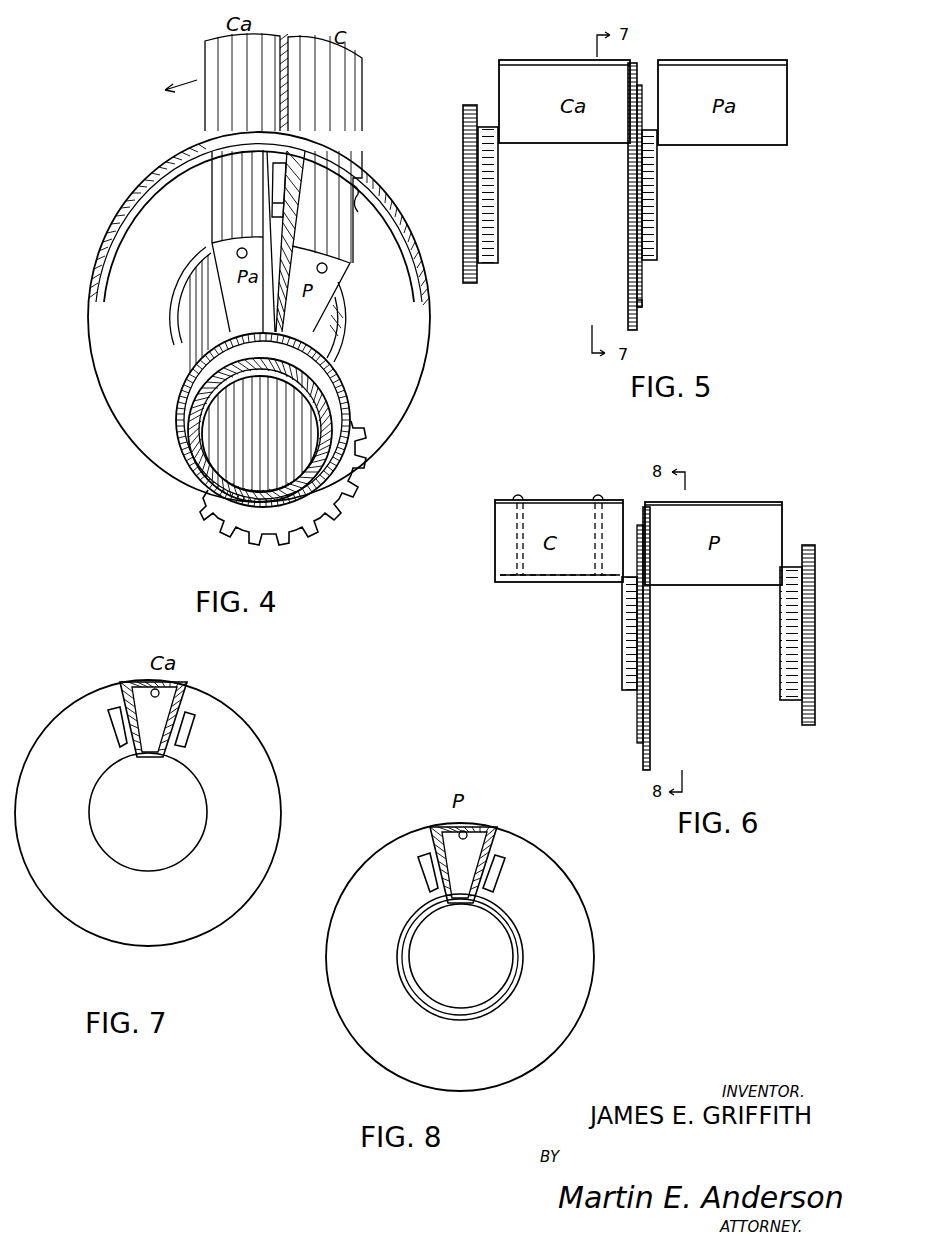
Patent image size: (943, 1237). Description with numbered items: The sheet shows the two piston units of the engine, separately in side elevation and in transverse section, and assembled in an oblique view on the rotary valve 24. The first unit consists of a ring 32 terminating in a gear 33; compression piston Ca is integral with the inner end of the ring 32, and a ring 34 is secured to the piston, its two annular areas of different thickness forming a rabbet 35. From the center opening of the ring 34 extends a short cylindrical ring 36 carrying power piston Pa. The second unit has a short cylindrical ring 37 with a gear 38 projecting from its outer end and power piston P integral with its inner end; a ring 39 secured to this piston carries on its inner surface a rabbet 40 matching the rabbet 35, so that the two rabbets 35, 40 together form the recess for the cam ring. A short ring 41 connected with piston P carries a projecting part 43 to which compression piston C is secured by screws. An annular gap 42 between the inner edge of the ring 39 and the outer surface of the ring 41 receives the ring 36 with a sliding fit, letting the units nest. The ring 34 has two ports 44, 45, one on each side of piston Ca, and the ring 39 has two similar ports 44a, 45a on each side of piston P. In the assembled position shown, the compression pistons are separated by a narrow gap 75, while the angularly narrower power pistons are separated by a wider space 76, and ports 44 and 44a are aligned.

In FIG. 4, the rotary valve 24 is at (202, 333).
In FIG. 5, the ring 32 is at (495, 195).
In FIG. 5, the gear 33 is at (466, 156).
In FIG. 4, the ring 34 is at (160, 155).
In FIG. 5, the ring 34 is at (630, 201).
In FIG. 7, the ring 34 is at (148, 813).
In FIG. 5, the rabbet 35 is at (637, 315).
In FIG. 4, the ring 36 is at (180, 287).
In FIG. 5, the ring 36 is at (656, 203).
In FIG. 4, the cylindrical ring 37 is at (190, 377).
In FIG. 6, the cylindrical ring 37 is at (790, 636).
In FIG. 4, the gear 38 is at (323, 390).
In FIG. 6, the gear 38 is at (815, 555).
In FIG. 4, the ring 39 is at (420, 338).
In FIG. 6, the ring 39 is at (652, 633).
In FIG. 8, the ring 39 is at (460, 957).
In FIG. 6, the rabbet 40 is at (642, 758).
In FIG. 4, the ring 41 is at (187, 302).
In FIG. 6, the ring 41 is at (622, 636).
In FIG. 8, the ring 41 is at (505, 925).
In FIG. 8, the annular gap 42 is at (520, 940).
In FIG. 6, the part 43 is at (583, 583).
In FIG. 7, the port 44 is at (110, 710).
In FIG. 4, the port 44a is at (280, 183).
In FIG. 8, the port 44a is at (427, 877).
In FIG. 7, the port 45 is at (190, 712).
In FIG. 4, the port 45a is at (358, 212).
In FIG. 8, the port 45a is at (498, 881).
In FIG. 4, the gap 75 is at (284, 34).
In FIG. 4, the space 76 is at (288, 157).